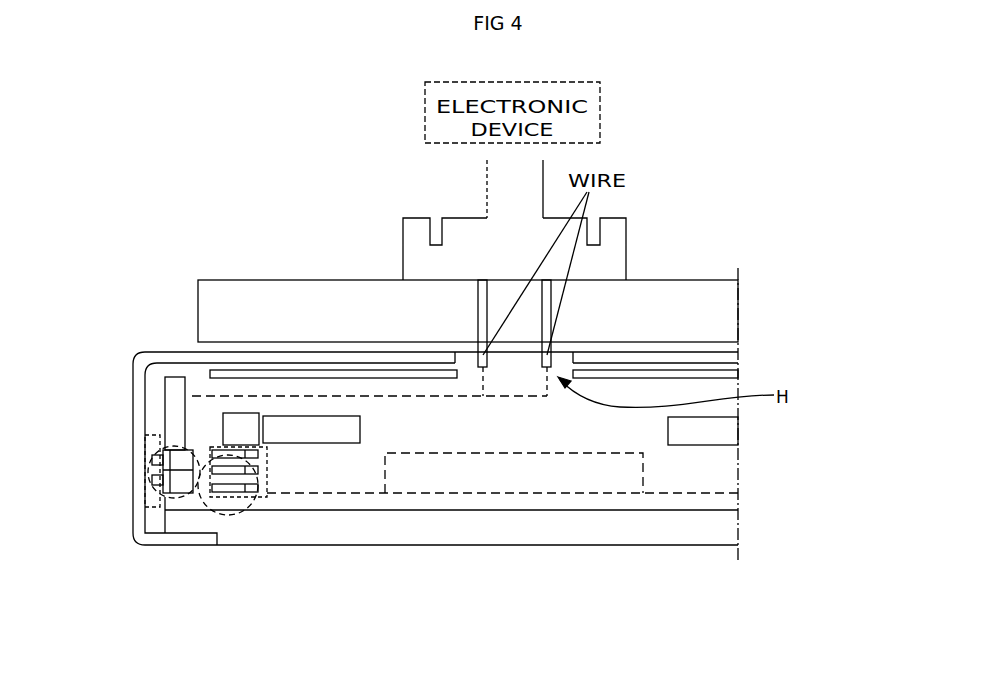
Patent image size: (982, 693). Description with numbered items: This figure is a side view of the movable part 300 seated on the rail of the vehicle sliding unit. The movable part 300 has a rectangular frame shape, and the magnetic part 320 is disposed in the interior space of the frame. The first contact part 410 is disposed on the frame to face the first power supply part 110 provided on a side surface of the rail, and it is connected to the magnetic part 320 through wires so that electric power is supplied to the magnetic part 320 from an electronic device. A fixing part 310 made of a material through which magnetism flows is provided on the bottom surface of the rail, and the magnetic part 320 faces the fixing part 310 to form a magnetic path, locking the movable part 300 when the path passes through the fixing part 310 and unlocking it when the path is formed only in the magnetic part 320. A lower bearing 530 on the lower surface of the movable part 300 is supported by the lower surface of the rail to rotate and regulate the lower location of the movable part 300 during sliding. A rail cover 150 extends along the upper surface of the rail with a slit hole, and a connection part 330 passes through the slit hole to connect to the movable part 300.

The first power supply part 110 is at (145, 443).
The rail cover 150 is at (358, 358).
The movable part 300 is at (741, 462).
The fixing part 310 is at (407, 530).
The magnetic part 320 is at (516, 474).
The connection part 330 is at (656, 297).
The first contact part 410 is at (147, 498).
The lower bearing 530 is at (240, 503).